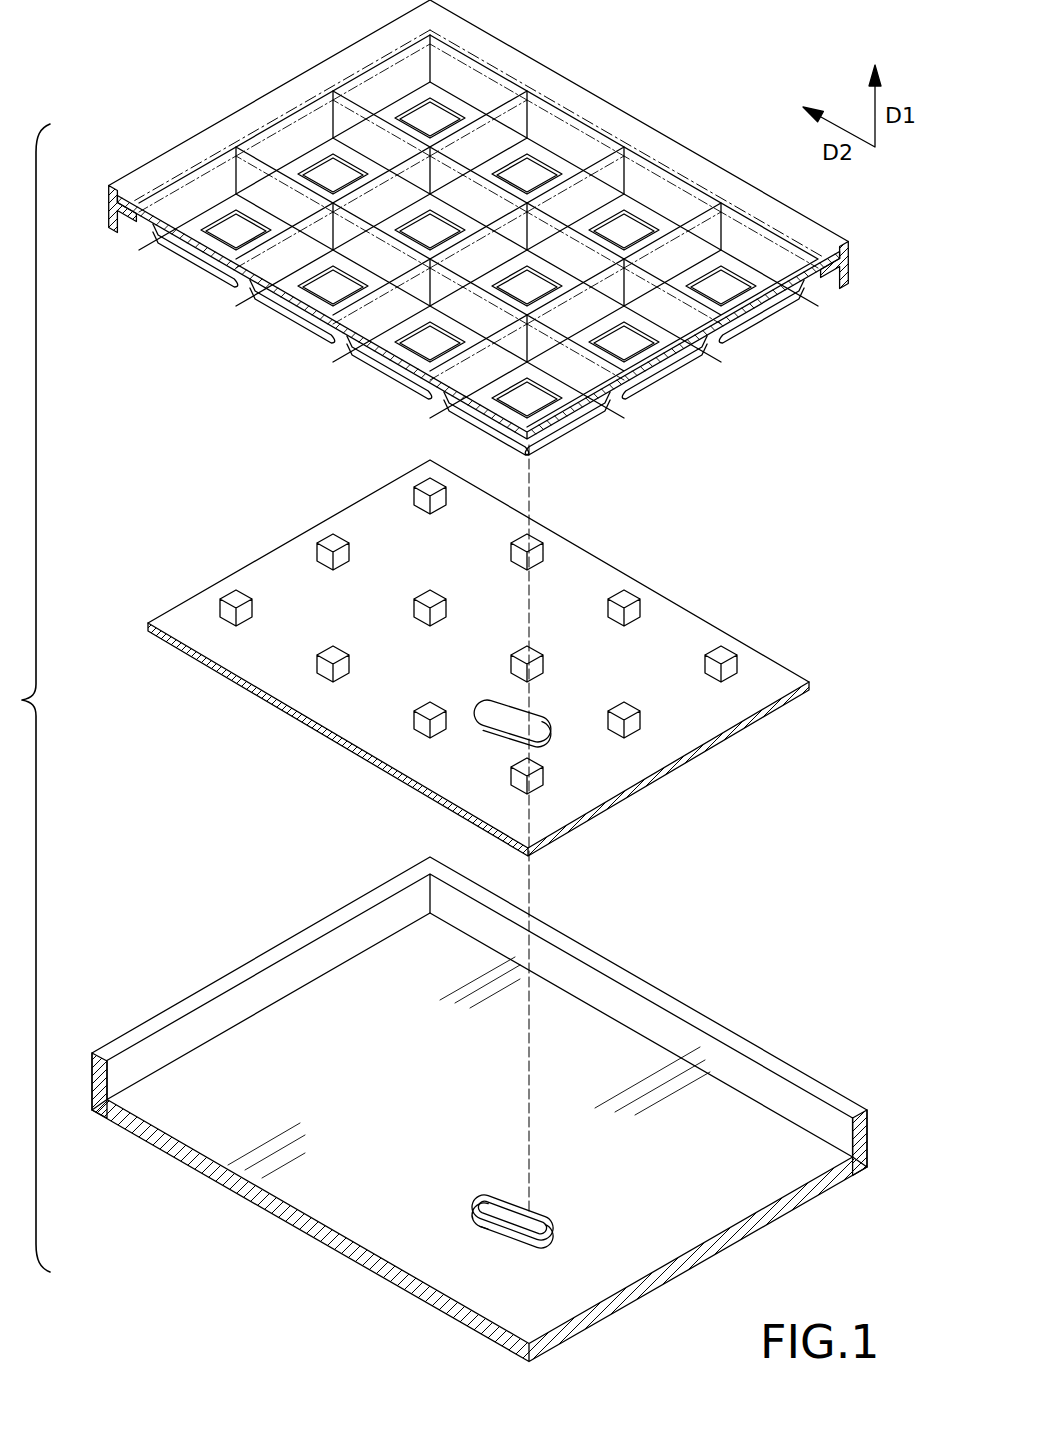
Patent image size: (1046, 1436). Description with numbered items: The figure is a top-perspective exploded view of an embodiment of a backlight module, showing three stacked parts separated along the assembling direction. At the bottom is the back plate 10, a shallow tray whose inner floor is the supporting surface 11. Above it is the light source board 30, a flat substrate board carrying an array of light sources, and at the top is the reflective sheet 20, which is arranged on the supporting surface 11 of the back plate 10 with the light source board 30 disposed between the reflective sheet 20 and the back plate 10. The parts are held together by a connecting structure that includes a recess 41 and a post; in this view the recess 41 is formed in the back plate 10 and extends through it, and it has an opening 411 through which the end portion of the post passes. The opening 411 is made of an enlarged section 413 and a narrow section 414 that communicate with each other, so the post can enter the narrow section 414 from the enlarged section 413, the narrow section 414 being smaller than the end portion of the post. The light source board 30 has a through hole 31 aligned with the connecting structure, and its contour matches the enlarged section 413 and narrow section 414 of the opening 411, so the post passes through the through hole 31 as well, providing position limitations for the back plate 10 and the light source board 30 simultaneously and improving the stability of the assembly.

The back plate 10 is at (228, 947).
The supporting surface 11 is at (202, 1125).
The reflective sheet 20 is at (160, 130).
The light source board 30 is at (272, 660).
The through hole 31 is at (503, 722).
The recess 41 is at (465, 1217).
The opening 411 is at (542, 1233).
The enlarged section 413 is at (530, 1243).
The narrow section 414 is at (483, 1217).